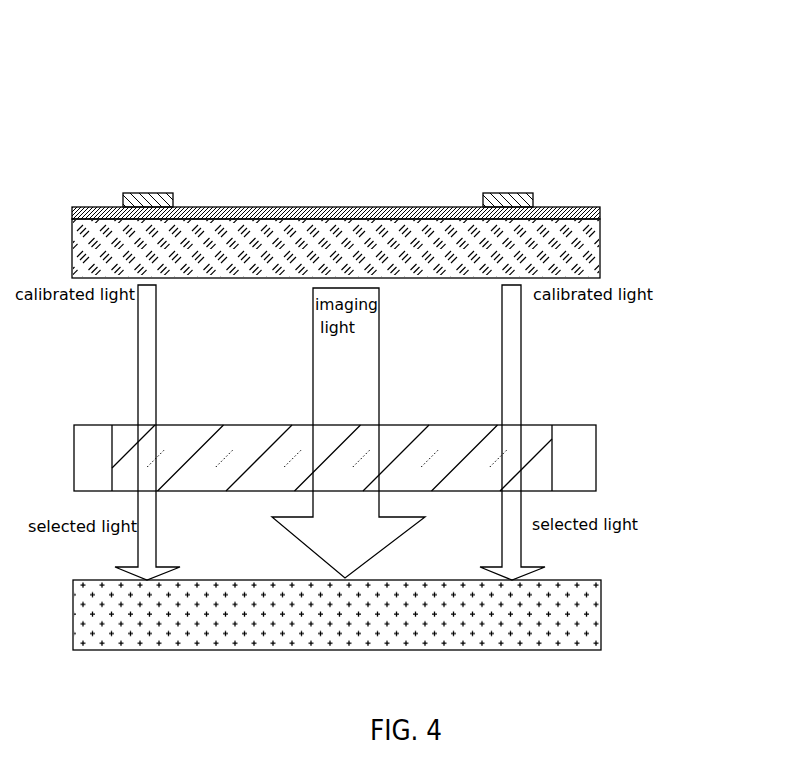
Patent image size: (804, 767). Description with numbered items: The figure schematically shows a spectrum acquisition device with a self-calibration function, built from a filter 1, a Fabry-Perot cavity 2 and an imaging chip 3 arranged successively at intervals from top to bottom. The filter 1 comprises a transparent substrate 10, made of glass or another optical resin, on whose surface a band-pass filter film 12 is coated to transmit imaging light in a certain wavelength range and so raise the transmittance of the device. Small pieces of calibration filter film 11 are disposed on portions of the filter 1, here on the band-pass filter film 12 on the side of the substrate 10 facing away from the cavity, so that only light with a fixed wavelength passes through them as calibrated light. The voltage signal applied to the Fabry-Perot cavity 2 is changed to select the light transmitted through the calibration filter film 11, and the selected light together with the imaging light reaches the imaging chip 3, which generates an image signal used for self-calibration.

The filter 1 is at (108, 263).
The substrate 10 is at (557, 265).
The calibration filter film 11 is at (508, 190).
The band-pass filter film 12 is at (583, 204).
The Fabry-Perot cavity 2 is at (585, 465).
The imaging chip 3 is at (592, 597).